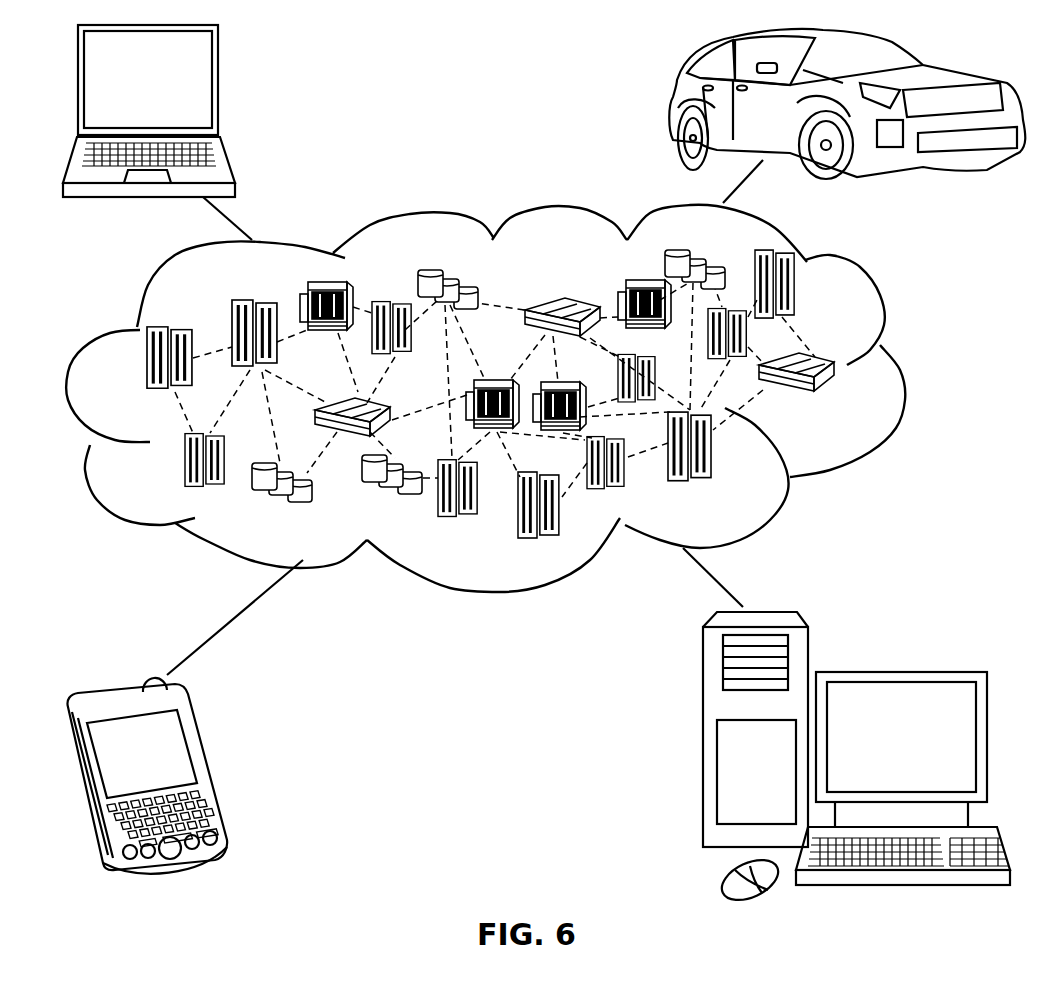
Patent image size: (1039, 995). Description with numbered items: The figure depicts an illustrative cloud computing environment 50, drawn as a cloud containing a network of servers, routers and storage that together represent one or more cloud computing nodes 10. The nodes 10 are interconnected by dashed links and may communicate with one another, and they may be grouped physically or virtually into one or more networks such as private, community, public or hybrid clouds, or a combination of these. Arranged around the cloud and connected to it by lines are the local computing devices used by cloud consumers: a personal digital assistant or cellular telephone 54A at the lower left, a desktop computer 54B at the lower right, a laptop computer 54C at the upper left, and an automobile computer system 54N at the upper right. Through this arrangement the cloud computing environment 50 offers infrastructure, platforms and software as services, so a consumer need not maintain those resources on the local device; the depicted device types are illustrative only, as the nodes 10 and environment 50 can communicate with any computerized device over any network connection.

The cloud computing nodes 10 is at (852, 405).
The cloud computing environment 50 is at (902, 371).
The personal digital assistant or cellular telephone 54A is at (210, 767).
The desktop computer 54B is at (898, 670).
The laptop computer 54C is at (218, 88).
The automobile computer system 54N is at (670, 103).